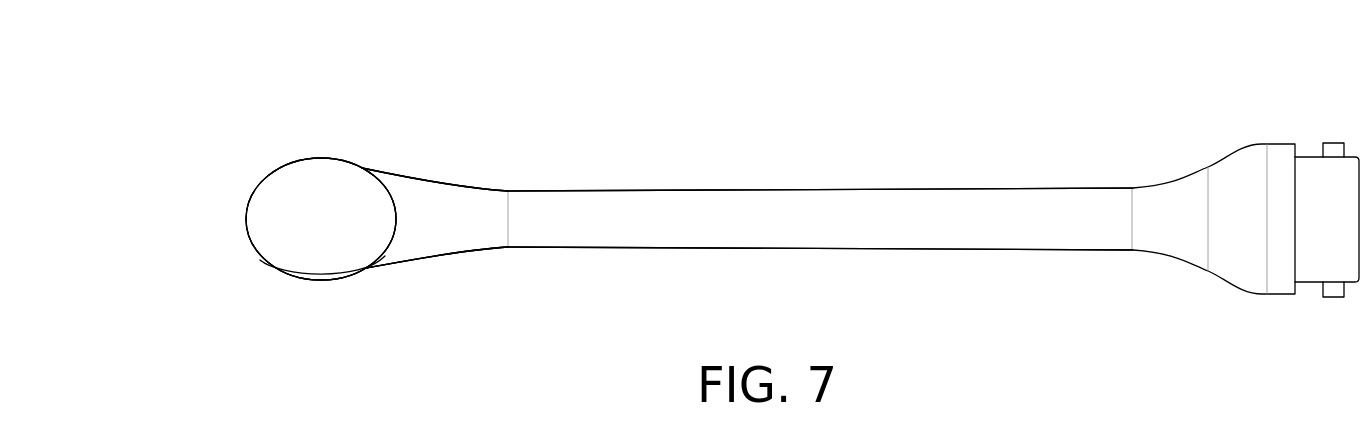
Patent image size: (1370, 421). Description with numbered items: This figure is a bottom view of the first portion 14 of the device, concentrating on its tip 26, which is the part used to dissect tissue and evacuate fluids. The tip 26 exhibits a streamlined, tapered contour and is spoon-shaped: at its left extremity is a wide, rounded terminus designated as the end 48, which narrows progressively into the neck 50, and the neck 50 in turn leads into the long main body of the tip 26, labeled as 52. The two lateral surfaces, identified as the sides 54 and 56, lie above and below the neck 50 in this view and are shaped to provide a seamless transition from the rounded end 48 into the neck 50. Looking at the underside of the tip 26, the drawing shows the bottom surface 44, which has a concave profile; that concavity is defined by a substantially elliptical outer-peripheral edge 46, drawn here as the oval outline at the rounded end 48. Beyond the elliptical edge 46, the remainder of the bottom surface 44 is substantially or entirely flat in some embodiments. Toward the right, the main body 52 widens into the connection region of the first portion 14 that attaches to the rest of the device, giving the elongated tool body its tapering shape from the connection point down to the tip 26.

The first portion 14 is at (889, 122).
The tip 26 is at (273, 137).
The bottom surface 44 is at (298, 245).
The outer-peripheral edge 46 is at (323, 280).
The end 48 is at (227, 183).
The neck 50 is at (438, 142).
The main body of the tip 52 is at (695, 205).
The side 54 is at (397, 173).
The side 56 is at (388, 263).